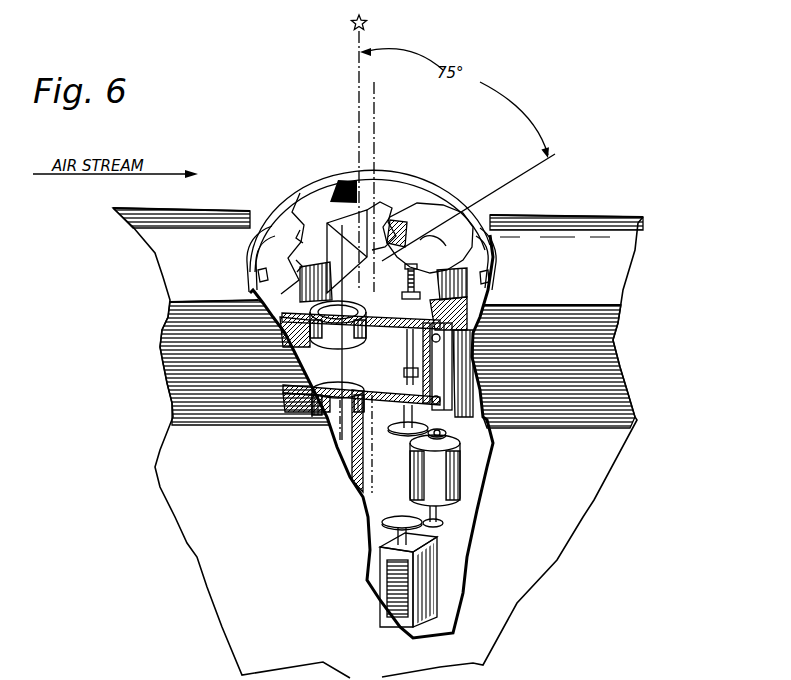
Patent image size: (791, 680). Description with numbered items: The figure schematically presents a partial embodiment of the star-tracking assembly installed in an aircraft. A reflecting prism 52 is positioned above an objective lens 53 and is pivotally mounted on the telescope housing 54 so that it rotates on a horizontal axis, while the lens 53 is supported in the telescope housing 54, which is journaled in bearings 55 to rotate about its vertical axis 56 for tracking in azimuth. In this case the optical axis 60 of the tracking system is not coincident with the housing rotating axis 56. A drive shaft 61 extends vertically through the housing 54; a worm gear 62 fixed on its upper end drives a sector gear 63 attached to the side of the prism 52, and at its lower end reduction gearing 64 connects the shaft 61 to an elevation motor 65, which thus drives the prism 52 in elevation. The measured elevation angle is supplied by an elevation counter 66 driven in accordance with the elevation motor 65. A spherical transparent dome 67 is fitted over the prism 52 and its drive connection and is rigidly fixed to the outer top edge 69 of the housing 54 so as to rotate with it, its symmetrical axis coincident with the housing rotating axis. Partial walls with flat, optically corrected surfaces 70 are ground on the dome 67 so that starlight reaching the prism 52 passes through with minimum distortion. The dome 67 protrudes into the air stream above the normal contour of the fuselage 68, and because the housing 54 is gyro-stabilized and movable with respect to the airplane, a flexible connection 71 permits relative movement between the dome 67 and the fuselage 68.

The reflecting prism 52 is at (340, 222).
The objective lens 53 is at (330, 337).
The telescope housing 54 is at (438, 366).
The bearings 55 is at (418, 373).
The vertical axis 56 is at (378, 136).
The optical axis 60 is at (338, 378).
The drive shaft 61 is at (406, 335).
The worm gear 62 is at (413, 277).
The sector gear 63 is at (379, 246).
The reduction gearing 64 is at (432, 419).
The elevation motor 65 is at (435, 481).
The elevation counter 66 is at (425, 586).
The spherical transparent dome 67 is at (290, 225).
The fuselage 68 is at (598, 296).
The outer top edge 69 is at (434, 318).
The flat optically corrected surfaces 70 is at (443, 217).
The flexible connection 71 is at (492, 235).